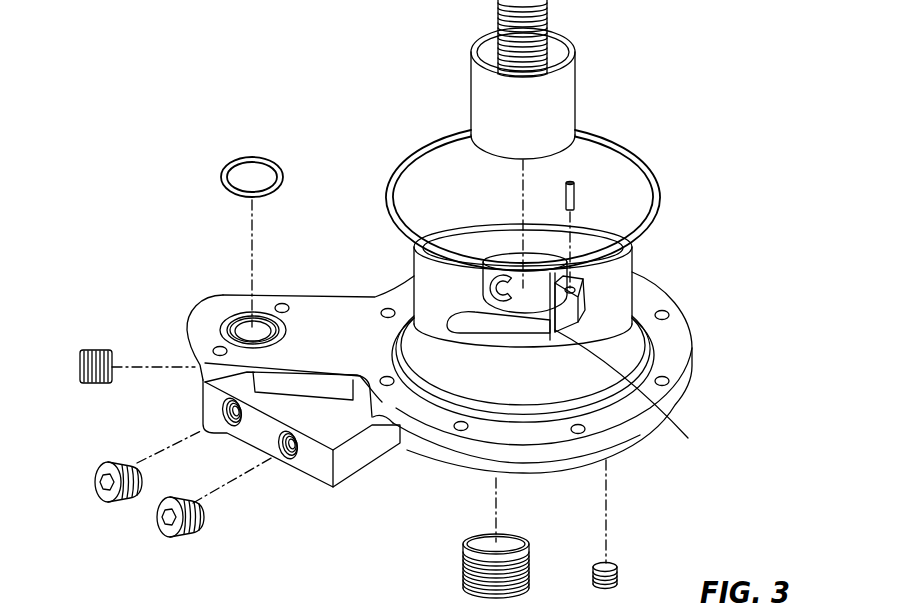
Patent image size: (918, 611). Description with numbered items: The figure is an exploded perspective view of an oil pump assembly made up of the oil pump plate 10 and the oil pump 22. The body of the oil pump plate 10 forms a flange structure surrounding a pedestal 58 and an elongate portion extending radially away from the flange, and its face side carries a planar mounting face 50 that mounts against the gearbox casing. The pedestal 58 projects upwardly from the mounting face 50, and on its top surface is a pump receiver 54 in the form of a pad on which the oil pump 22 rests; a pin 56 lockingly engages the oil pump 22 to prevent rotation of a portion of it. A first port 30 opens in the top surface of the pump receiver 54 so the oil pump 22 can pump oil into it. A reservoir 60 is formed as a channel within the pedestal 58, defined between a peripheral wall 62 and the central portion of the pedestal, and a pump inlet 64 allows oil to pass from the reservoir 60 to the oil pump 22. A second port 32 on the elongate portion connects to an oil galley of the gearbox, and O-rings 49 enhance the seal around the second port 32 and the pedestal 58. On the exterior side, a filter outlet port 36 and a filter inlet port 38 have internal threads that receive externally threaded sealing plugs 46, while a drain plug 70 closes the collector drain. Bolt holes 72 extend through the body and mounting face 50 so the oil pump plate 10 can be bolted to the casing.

The oil pump plate 10 is at (462, 378).
The oil pump 22 is at (568, 88).
The first port 30 is at (492, 290).
The second port 32 is at (250, 322).
The filter outlet port 36 is at (283, 462).
The filter inlet port 38 is at (222, 410).
The sealing plug 46 is at (82, 358).
The O-ring 49 is at (645, 165).
The mounting face 50 is at (325, 313).
The pump receiver 54 is at (583, 300).
The pin 56 is at (576, 197).
The pedestal 58 is at (432, 284).
The reservoir 60 is at (612, 292).
The peripheral wall 62 is at (620, 355).
The pump inlet 64 is at (632, 395).
The drain plug 70 is at (621, 577).
The bolt holes 72 is at (458, 432).